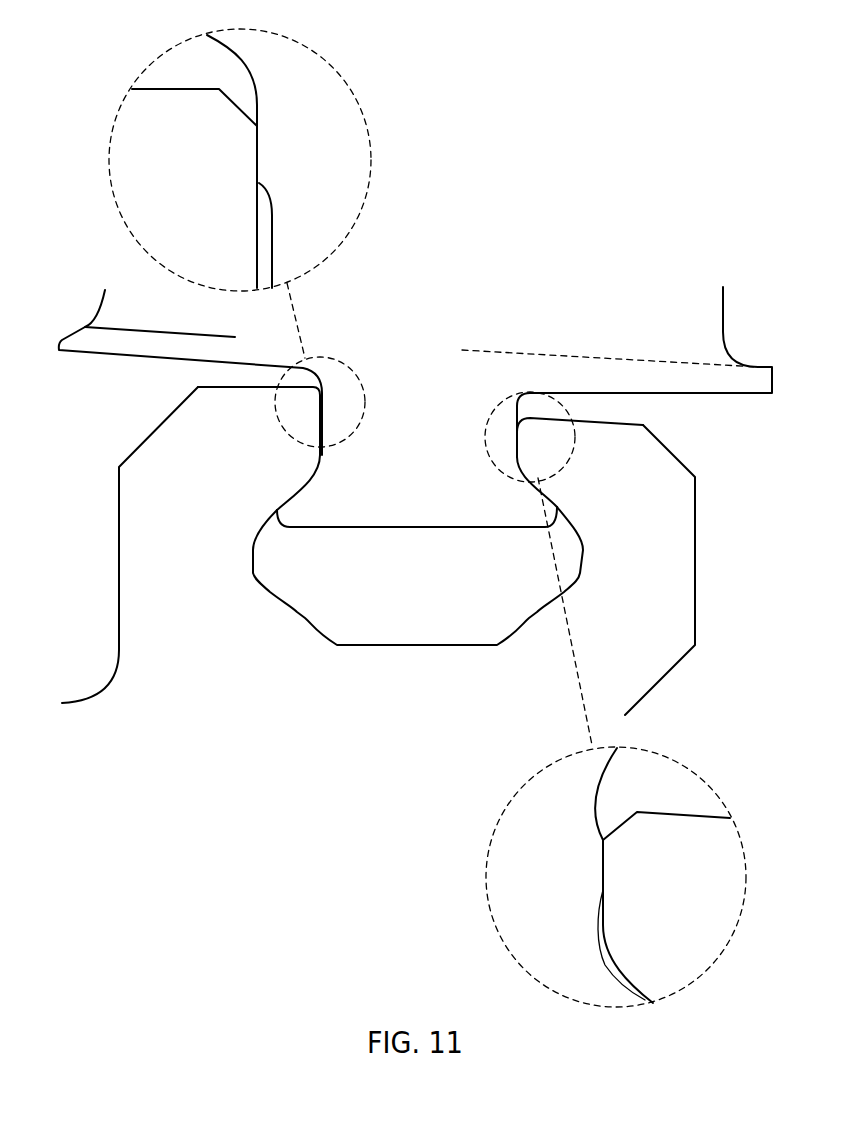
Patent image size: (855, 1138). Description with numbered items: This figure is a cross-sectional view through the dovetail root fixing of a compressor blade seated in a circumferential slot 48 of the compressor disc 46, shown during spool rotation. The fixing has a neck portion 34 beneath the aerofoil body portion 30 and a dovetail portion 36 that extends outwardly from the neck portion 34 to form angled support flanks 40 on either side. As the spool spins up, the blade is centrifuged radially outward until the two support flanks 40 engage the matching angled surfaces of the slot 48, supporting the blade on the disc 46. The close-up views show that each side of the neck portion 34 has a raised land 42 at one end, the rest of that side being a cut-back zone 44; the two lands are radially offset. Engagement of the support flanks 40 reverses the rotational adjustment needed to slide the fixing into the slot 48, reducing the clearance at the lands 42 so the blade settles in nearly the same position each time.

The aerofoil body portion 30 is at (434, 300).
The neck portion 34 is at (409, 443).
The dovetail portion 36 is at (409, 502).
The support flanks 40 is at (336, 438).
The raised land 42 is at (257, 140).
The cut-back zone 44 is at (272, 248).
The disc 46 is at (389, 717).
The slot 48 is at (583, 578).